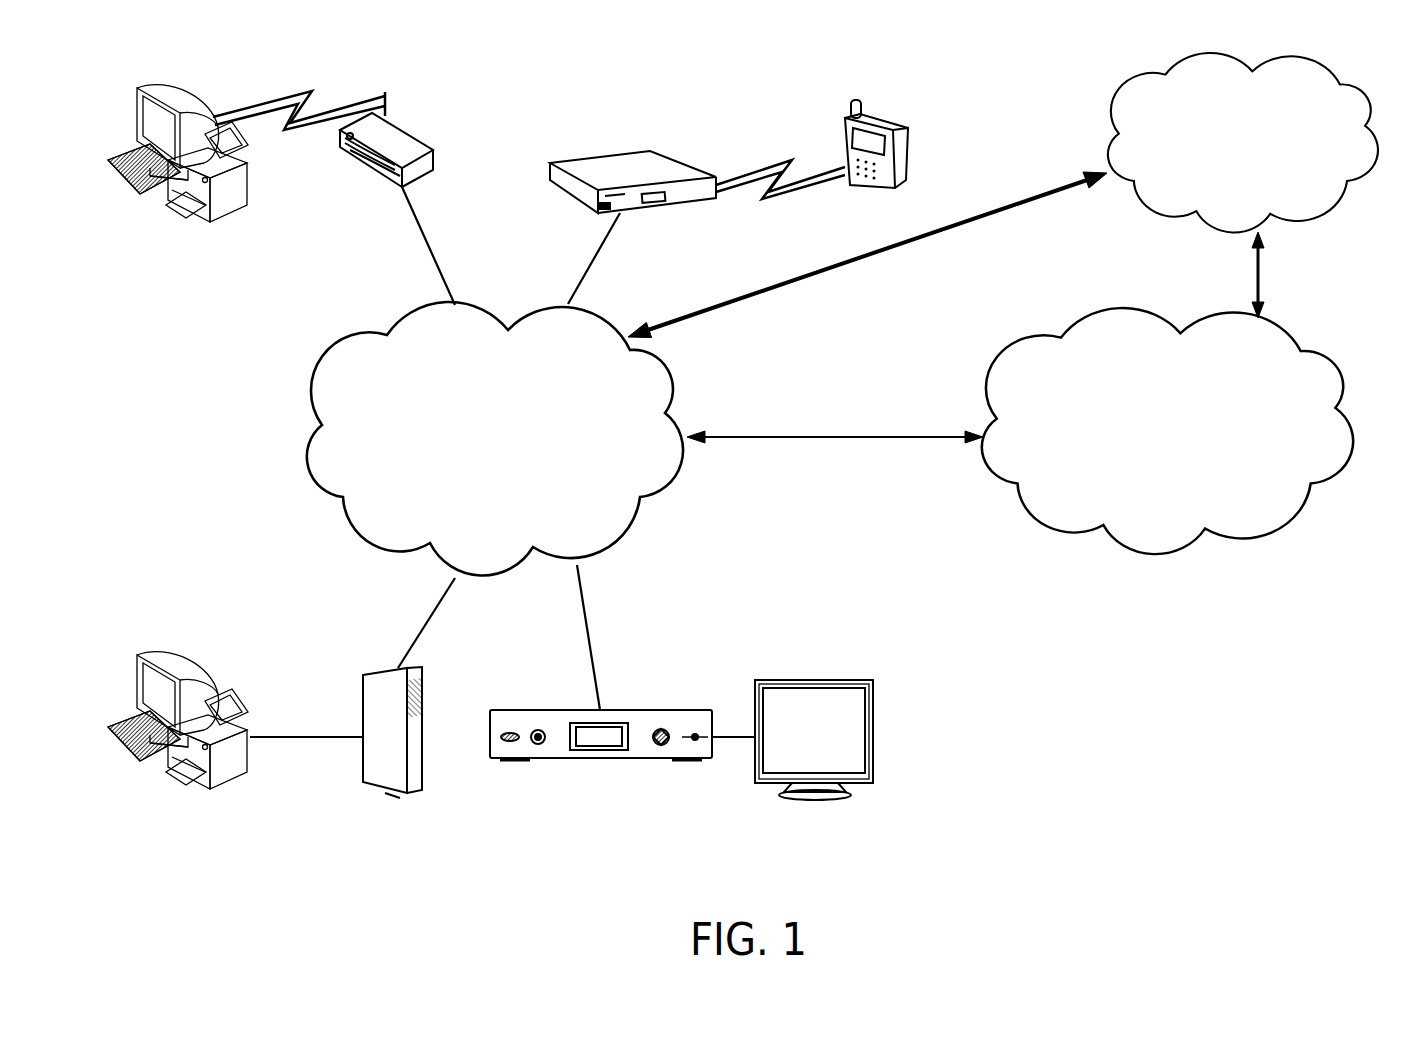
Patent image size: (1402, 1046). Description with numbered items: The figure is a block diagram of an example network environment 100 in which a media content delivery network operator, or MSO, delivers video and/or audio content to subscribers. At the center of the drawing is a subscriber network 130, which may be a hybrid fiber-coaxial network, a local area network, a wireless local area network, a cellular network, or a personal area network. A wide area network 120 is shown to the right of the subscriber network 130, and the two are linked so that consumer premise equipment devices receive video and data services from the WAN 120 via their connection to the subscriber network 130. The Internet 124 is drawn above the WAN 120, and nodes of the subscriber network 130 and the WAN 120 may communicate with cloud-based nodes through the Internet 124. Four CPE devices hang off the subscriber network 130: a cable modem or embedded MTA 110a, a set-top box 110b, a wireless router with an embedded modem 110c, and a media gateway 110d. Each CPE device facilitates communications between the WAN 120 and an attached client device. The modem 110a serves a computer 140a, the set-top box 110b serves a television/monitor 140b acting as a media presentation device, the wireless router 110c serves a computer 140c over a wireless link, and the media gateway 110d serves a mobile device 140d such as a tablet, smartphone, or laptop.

The network environment 100 is at (1272, 816).
The modem 110a is at (398, 797).
The set-top box 110b is at (597, 759).
The wireless router 110c is at (420, 142).
The media gateway 110d is at (648, 152).
The wide area network 120 is at (1153, 557).
The Internet 124 is at (1328, 207).
The subscriber network 130 is at (408, 546).
The computer 140a is at (156, 649).
The television/monitor 140b is at (823, 680).
The computer 140c is at (156, 82).
The mobile device 140d is at (902, 125).